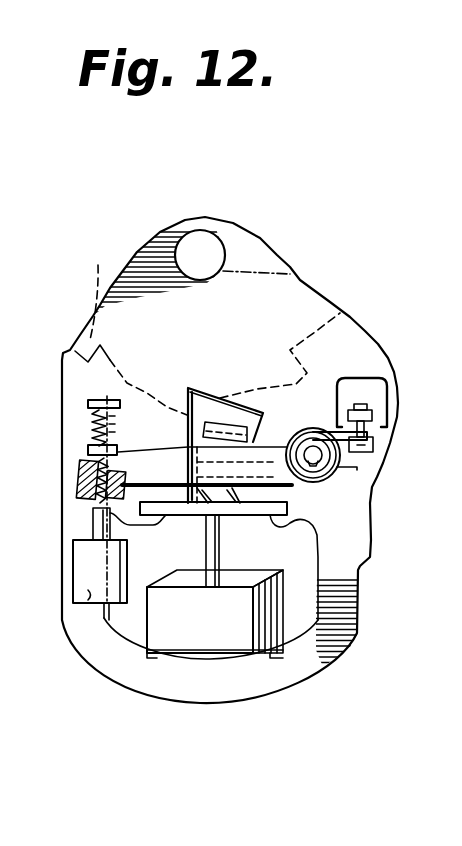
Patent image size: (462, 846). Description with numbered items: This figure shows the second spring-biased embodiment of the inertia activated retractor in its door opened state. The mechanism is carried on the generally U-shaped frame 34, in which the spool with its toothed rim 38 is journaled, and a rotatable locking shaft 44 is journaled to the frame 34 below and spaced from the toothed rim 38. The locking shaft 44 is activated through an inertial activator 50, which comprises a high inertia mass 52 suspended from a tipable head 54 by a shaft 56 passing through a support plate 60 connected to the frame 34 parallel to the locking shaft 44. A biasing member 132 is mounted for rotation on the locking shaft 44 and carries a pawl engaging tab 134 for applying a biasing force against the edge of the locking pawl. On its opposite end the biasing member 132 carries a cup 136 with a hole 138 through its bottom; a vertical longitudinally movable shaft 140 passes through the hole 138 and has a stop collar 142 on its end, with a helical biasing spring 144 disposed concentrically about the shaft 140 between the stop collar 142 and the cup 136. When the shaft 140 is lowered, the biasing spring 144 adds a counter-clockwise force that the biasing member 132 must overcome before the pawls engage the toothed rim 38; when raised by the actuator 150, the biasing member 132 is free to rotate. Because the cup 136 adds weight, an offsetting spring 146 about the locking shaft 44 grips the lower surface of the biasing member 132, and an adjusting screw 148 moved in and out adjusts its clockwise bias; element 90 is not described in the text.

The frame 34 is at (233, 242).
The toothed rim 38 is at (98, 265).
The biasing member 132 is at (293, 408).
The pawl engaging tab 134 is at (232, 396).
The stop collar 142 is at (78, 462).
The helical biasing spring 144 is at (112, 460).
The cup 136 is at (78, 486).
The hole 138 is at (93, 504).
The vertical longitudinally movable shaft 140 is at (96, 514).
The actuator 150 is at (87, 603).
The rotatable locking shaft 44 is at (308, 462).
The adjusting screw 148 is at (372, 445).
The offsetting spring 146 is at (354, 466).
The lever end 90 is at (338, 472).
The tipable head 54 is at (220, 507).
The support plate 60 is at (287, 530).
The shaft 56 is at (215, 562).
The high inertia mass 52 is at (212, 633).
The inertial activator 50 is at (187, 537).